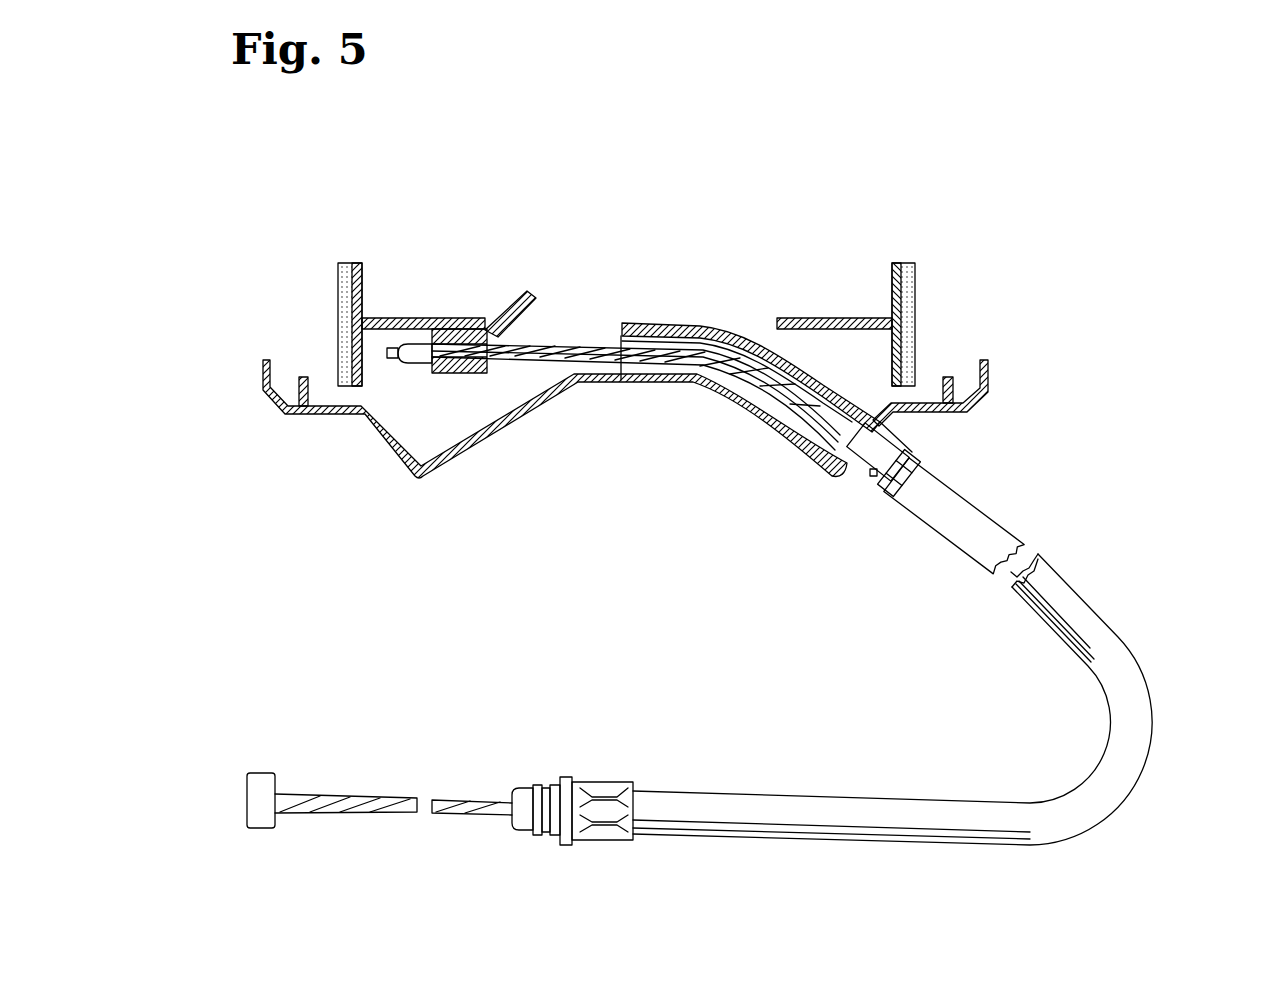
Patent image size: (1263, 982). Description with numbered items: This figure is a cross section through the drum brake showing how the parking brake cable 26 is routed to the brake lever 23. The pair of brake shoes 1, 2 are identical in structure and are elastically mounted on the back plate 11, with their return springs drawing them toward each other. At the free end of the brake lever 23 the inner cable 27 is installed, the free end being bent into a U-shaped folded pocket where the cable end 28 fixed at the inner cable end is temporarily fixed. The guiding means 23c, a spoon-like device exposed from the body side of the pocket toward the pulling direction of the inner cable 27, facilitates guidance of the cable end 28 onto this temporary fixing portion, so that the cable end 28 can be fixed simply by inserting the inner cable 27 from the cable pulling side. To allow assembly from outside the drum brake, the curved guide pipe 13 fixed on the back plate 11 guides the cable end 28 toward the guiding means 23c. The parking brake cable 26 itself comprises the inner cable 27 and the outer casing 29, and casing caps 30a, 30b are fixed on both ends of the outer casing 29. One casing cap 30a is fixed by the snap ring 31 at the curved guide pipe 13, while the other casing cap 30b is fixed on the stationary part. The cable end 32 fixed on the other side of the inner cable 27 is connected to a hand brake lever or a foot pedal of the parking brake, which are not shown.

The brake shoe 1 is at (337, 259).
The brake shoe 2 is at (919, 262).
The back plate 11 is at (417, 482).
The guide pipe 13 is at (752, 323).
The brake lever 23 is at (500, 322).
The guiding means 23c is at (538, 306).
The parking brake cable 26 is at (1150, 677).
The inner cable 27 is at (521, 363).
The cable end 28 is at (412, 362).
The outer casing 29 is at (990, 512).
The casing cap 30a is at (912, 455).
The casing cap 30b is at (605, 840).
The snap ring 31 is at (873, 478).
The cable end 32 is at (260, 826).